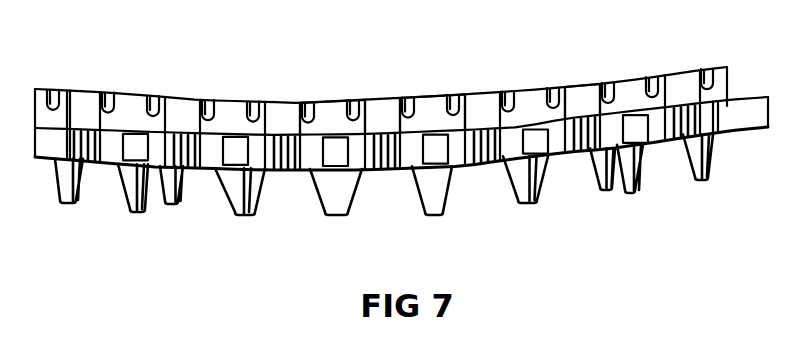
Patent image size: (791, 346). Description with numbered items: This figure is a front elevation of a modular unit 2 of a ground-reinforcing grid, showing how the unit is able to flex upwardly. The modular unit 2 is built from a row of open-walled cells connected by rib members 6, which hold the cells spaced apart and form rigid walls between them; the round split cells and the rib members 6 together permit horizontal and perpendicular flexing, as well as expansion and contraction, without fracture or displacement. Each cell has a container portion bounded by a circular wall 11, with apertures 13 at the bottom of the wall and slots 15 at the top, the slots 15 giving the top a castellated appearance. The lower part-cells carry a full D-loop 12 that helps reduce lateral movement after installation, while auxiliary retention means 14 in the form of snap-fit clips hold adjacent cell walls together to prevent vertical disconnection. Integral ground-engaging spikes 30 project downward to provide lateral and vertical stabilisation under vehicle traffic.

The modular unit 2 is at (401, 146).
The rib member 6 is at (580, 100).
The circular wall 11 is at (437, 122).
The D-loop 12 is at (745, 117).
The aperture 13 is at (232, 153).
The auxiliary retention means 14 is at (679, 145).
The slot 15 is at (107, 100).
The ground-engaging spike 30 is at (523, 173).